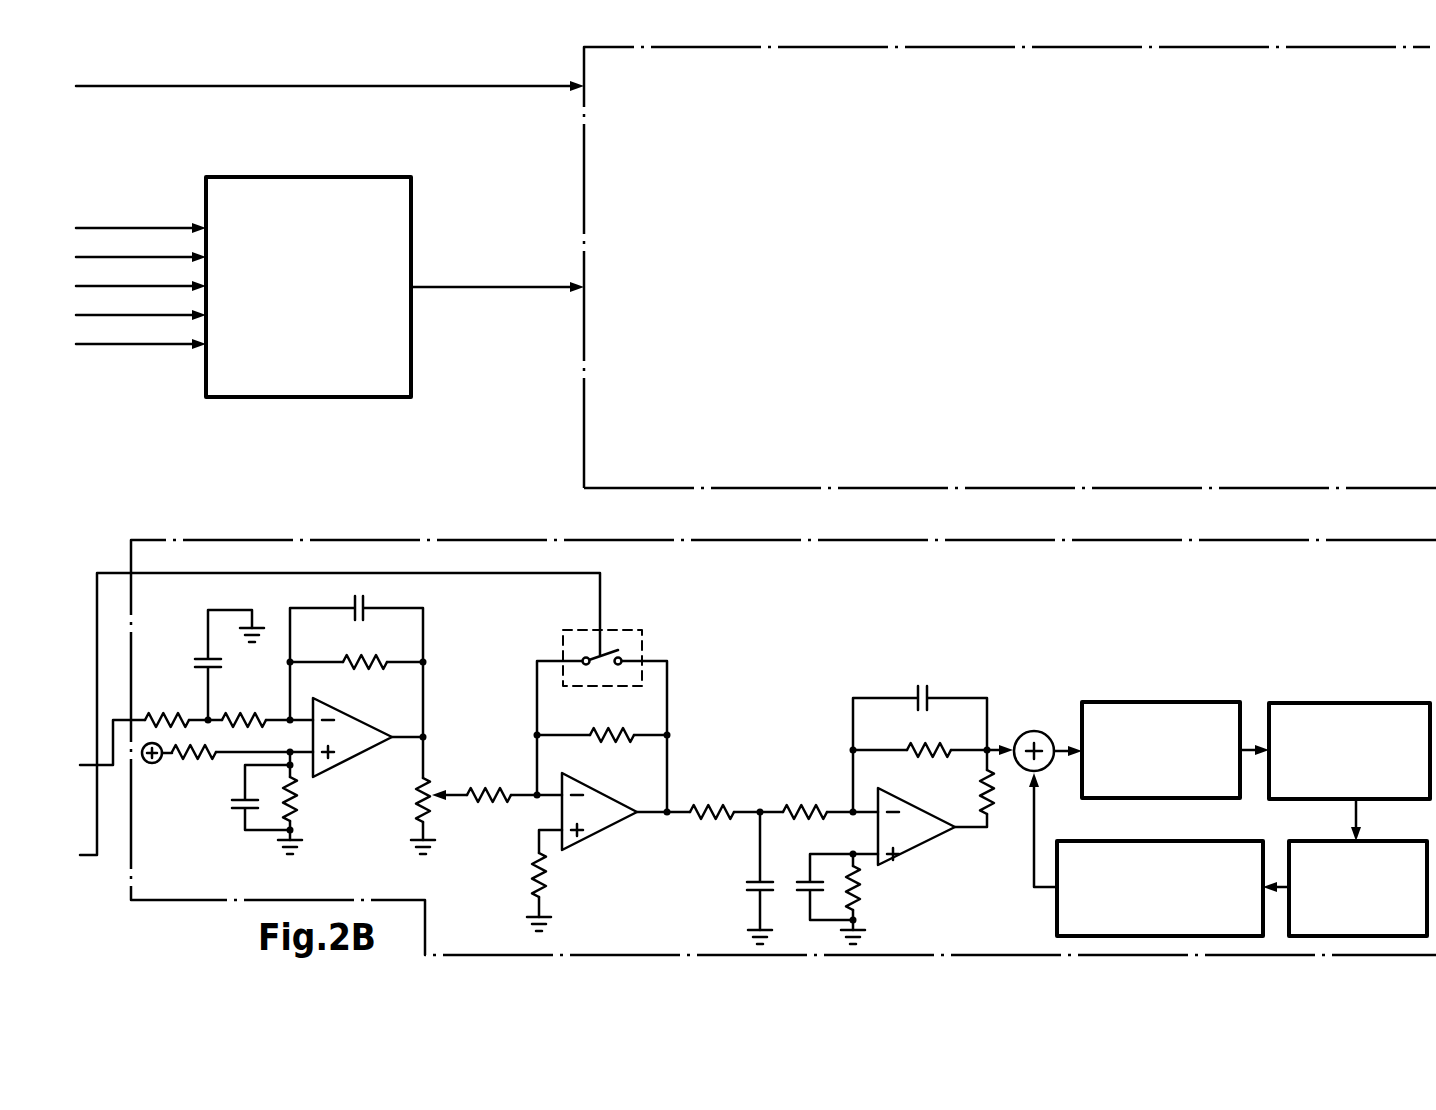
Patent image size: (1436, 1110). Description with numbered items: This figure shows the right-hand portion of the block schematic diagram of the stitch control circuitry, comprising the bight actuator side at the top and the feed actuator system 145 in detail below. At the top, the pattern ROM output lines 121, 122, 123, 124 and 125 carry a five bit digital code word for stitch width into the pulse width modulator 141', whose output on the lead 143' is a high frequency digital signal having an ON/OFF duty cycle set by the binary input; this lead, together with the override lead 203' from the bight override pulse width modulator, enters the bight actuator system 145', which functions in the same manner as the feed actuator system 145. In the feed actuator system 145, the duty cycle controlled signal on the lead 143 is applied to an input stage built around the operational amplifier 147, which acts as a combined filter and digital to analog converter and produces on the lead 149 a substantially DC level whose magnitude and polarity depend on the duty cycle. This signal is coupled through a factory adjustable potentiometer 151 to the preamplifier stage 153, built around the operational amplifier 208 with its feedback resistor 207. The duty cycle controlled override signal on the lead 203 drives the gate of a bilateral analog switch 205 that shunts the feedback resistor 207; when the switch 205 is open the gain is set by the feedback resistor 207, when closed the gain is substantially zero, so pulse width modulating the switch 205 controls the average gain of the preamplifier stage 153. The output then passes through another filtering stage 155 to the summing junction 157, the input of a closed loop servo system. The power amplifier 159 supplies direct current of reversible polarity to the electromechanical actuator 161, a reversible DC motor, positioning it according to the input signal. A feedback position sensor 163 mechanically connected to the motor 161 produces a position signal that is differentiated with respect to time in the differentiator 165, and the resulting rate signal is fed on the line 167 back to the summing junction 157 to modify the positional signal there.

The output lead 203' is at (330, 68).
The pulse width modulator 141' is at (308, 266).
The output line 121 is at (88, 227).
The output line 122 is at (88, 256).
The output line 123 is at (88, 285).
The output line 124 is at (88, 314).
The output line 125 is at (88, 343).
The lead 143' is at (497, 266).
The bight actuator system 145' is at (977, 267).
The lead 203 is at (340, 678).
The feed actuator system 145 is at (783, 725).
The lead 143 is at (112, 807).
The operational amplifier 147 is at (358, 755).
The lead 149 is at (425, 757).
The factory adjustable potentiometer 151 is at (415, 810).
The bilateral analog switch 205 is at (617, 627).
The feedback resistor 207 is at (597, 727).
The operational amplifier 208 is at (600, 833).
The preamplifier stage 153 is at (612, 893).
The filtering stage 155 is at (938, 893).
The summing junction 157 is at (1038, 729).
The power amplifier 159 is at (1127, 702).
The electromechanical actuator 161 is at (1317, 703).
The feedback position sensor 163 is at (1337, 841).
The differentiator 165 is at (1128, 841).
The line 167 is at (1033, 858).